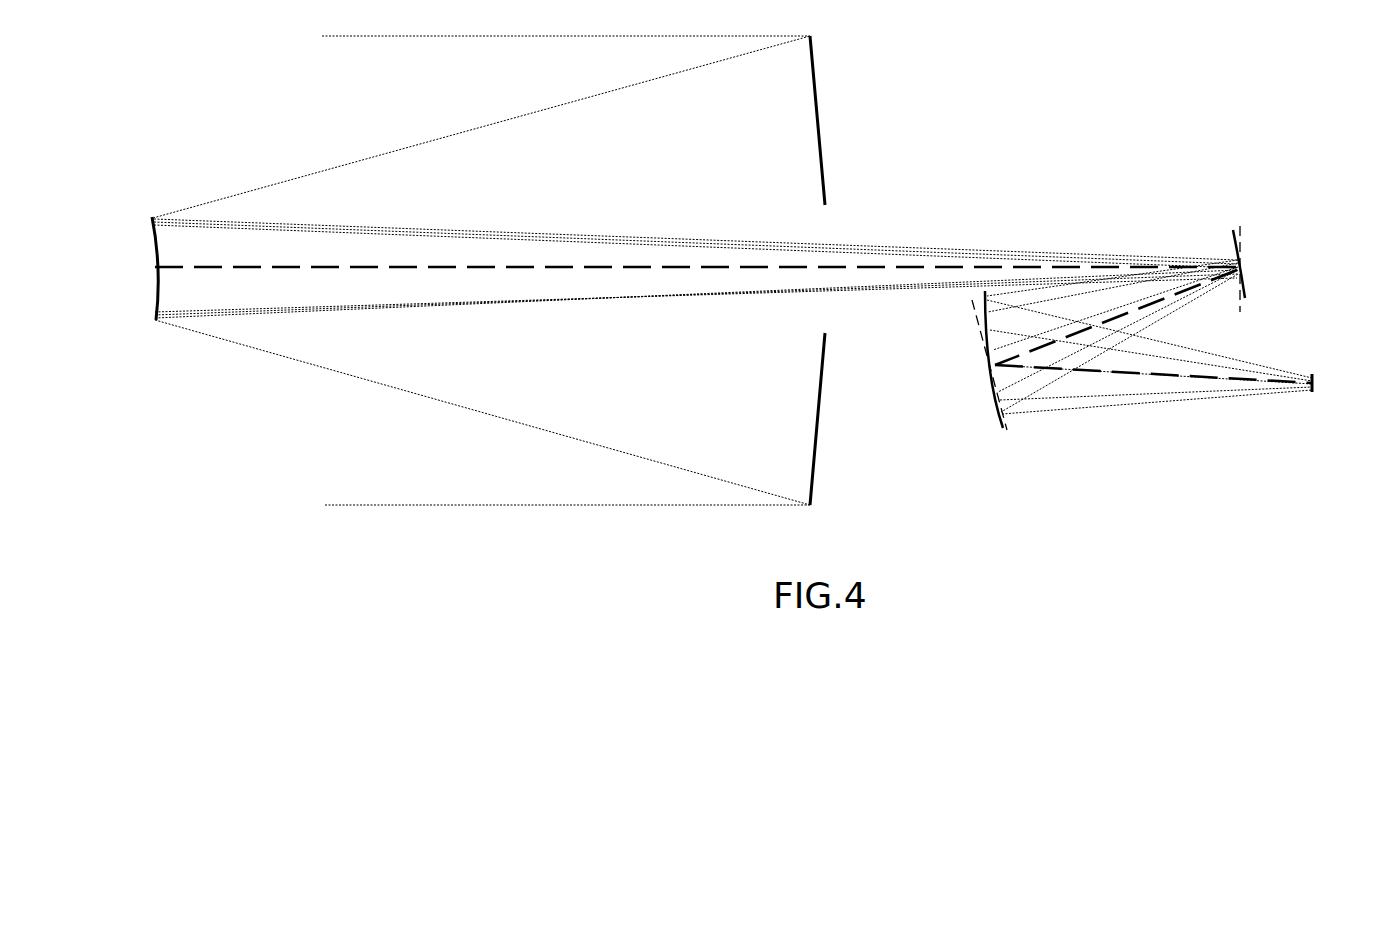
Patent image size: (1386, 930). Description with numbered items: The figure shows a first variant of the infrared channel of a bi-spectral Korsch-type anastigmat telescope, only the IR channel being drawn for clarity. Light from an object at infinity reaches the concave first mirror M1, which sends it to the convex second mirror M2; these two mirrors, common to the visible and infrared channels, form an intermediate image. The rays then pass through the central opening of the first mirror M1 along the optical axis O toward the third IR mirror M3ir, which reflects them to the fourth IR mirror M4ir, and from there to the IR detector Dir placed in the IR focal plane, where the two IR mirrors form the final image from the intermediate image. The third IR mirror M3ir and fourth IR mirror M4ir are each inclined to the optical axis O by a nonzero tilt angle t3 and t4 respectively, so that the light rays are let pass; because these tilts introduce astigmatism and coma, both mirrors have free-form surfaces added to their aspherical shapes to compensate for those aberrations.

The first mirror M1 is at (818, 115).
The second mirror M2 is at (154, 248).
The third IR mirror M3ir is at (1233, 246).
The fourth IR mirror M4ir is at (999, 409).
The tilt angle of the third IR mirror t3 is at (1240, 225).
The tilt angle of the fourth IR mirror t4 is at (986, 303).
The IR detector Dir is at (1316, 385).
The optical axis O is at (313, 272).